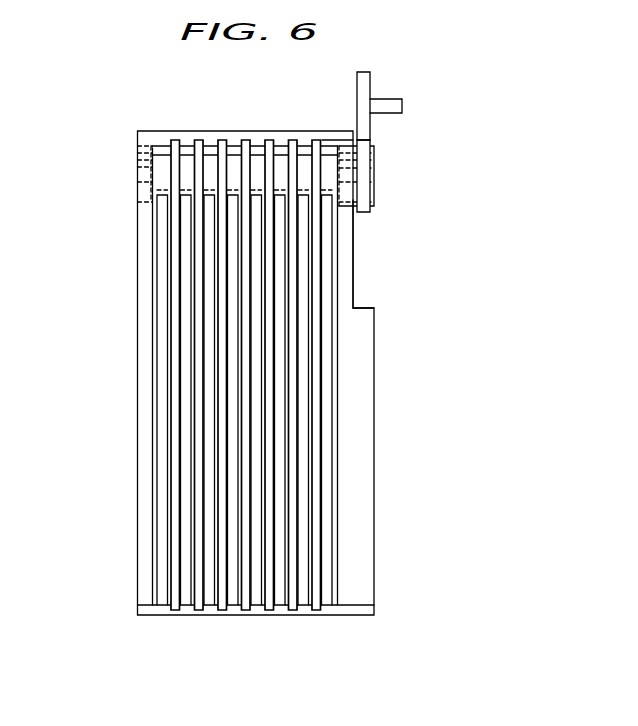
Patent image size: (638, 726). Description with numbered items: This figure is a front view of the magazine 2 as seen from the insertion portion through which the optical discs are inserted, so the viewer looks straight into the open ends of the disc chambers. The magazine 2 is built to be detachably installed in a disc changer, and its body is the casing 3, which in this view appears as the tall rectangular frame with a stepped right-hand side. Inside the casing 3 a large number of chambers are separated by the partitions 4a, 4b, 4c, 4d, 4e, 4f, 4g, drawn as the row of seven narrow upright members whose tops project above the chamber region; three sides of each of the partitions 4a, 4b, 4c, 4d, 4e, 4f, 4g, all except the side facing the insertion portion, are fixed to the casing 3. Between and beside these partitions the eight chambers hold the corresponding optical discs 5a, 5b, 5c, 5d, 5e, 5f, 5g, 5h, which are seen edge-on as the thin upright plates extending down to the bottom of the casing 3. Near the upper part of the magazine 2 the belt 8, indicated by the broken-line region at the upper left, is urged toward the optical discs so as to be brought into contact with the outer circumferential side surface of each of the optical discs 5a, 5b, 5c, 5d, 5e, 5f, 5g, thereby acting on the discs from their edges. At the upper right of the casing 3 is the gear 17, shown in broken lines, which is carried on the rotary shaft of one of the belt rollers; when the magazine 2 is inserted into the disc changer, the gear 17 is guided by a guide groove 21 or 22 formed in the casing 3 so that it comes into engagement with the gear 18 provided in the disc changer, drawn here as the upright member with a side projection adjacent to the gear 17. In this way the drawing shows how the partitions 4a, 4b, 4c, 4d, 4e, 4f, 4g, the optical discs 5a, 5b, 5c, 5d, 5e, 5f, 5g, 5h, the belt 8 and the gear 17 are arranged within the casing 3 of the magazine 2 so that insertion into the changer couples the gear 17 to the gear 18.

The magazine 2 is at (137, 262).
The casing 3 is at (143, 302).
The partition 4a is at (313, 131).
The partition 4b is at (289, 131).
The partition 4c is at (265, 131).
The partition 4d is at (241, 131).
The partition 4e is at (217, 131).
The partition 4f is at (193, 131).
The partition 4g is at (172, 131).
The optical disc 5a is at (327, 609).
The optical disc 5b is at (303, 609).
The optical disc 5c is at (280, 609).
The optical disc 5d is at (257, 609).
The optical disc 5e is at (233, 609).
The optical disc 5f is at (210, 609).
The optical disc 5g is at (187, 609).
The optical disc 5h is at (163, 609).
The belt 8 is at (160, 178).
The gear 17 is at (363, 160).
The gear 18 is at (367, 82).
The guide groove 21 is at (373, 140).
The guide groove 22 is at (360, 258).